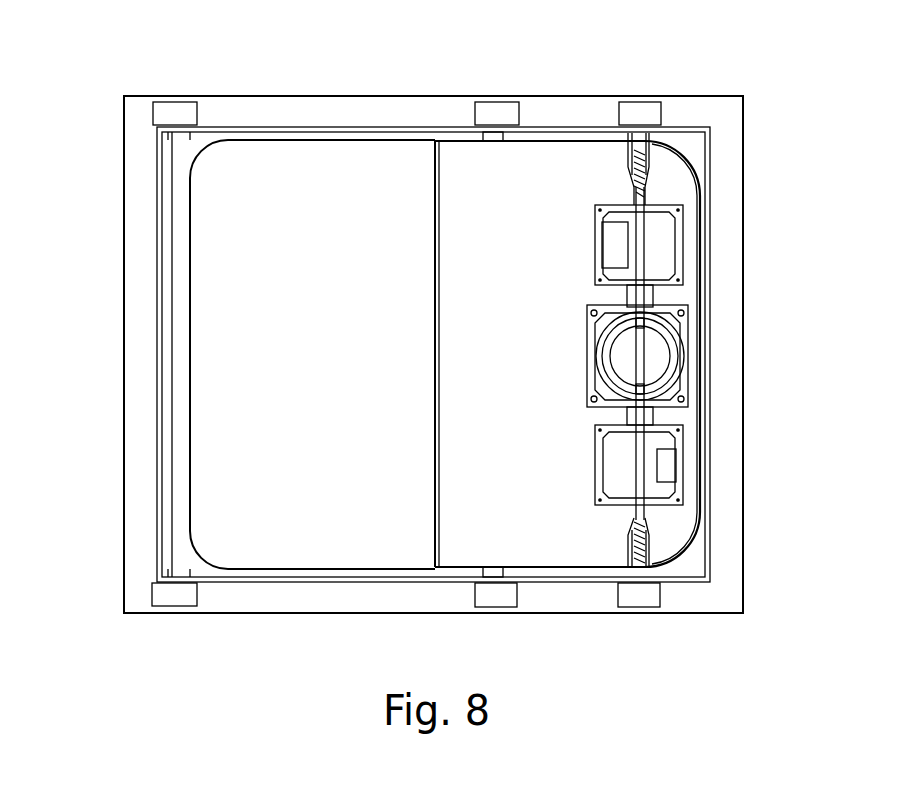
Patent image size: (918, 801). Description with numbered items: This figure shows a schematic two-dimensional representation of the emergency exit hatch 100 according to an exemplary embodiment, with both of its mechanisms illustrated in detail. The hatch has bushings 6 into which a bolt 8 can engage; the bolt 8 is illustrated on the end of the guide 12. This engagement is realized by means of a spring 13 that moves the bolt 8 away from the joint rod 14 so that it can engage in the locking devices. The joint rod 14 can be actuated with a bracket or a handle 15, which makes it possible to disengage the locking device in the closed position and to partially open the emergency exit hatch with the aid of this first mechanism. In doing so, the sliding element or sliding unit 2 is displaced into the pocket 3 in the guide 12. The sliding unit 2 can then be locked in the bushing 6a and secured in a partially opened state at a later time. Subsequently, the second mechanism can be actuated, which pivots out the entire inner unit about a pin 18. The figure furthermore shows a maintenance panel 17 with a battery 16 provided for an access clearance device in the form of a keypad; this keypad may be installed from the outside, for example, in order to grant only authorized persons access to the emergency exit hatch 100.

The door apparatus 100 is at (133, 57).
The guide 12 is at (558, 130).
The bushing 6a is at (497, 116).
The bushings 6 is at (641, 116).
The pin 18 is at (167, 532).
The pocket 3 is at (325, 520).
The sliding unit 2 is at (545, 520).
The bolt 8 is at (700, 140).
The spring 13 is at (650, 163).
The joint rod 14 is at (638, 200).
The handle 15 is at (665, 356).
The battery 16 is at (665, 458).
The maintenance panel 17 is at (652, 488).